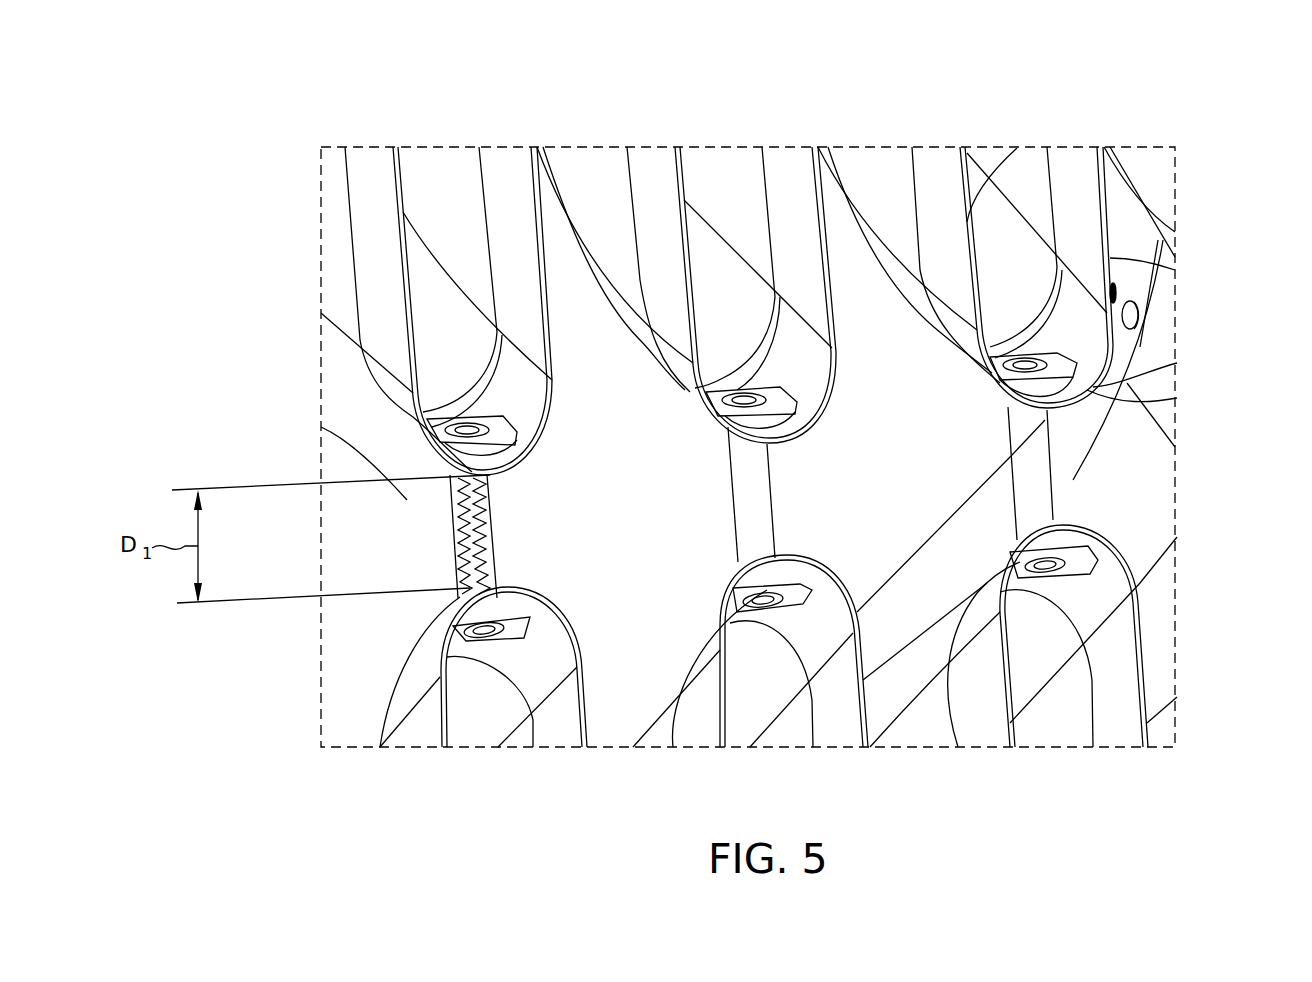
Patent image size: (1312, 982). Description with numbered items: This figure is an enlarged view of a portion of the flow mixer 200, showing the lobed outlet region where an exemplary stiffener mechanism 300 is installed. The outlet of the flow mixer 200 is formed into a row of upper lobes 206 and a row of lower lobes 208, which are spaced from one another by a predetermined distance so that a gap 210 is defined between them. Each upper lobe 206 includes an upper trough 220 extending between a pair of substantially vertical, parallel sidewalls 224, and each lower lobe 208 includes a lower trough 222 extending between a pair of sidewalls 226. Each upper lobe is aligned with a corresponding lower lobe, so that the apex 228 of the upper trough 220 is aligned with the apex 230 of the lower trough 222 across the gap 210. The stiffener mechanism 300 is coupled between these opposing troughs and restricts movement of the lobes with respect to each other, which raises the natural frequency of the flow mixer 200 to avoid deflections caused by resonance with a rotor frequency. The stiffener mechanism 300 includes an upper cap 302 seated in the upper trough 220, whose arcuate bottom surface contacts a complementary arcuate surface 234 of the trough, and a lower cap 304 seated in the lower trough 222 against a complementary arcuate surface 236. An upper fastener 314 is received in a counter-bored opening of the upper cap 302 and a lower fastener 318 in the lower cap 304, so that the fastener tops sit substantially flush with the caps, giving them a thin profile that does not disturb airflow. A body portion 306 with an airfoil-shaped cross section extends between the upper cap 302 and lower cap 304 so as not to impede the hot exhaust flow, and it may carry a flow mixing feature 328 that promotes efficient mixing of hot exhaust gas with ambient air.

The flow mixer 200 is at (1151, 116).
The upper lobes 206 is at (1183, 179).
The lower lobes 208 is at (300, 670).
The gap 210 is at (1061, 451).
The upper trough 220 is at (808, 425).
The lower trough 222 is at (813, 564).
The sidewalls 224 is at (969, 212).
The sidewalls 226 is at (1147, 643).
The apex 228 is at (500, 471).
The apex 230 is at (503, 585).
The arcuate surface 234 is at (820, 380).
The arcuate surface 236 is at (830, 600).
The stiffener mechanism 300 is at (761, 496).
The upper cap 302 is at (698, 411).
The lower cap 304 is at (718, 579).
The body portion 306 is at (742, 487).
The upper fastener 314 is at (747, 398).
The lower fastener 318 is at (745, 614).
The flow mixing feature 328 is at (452, 510).